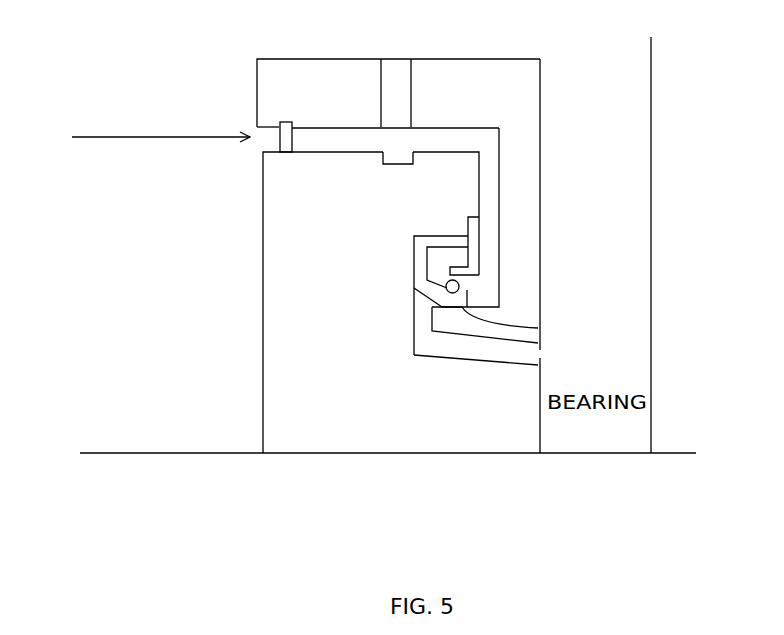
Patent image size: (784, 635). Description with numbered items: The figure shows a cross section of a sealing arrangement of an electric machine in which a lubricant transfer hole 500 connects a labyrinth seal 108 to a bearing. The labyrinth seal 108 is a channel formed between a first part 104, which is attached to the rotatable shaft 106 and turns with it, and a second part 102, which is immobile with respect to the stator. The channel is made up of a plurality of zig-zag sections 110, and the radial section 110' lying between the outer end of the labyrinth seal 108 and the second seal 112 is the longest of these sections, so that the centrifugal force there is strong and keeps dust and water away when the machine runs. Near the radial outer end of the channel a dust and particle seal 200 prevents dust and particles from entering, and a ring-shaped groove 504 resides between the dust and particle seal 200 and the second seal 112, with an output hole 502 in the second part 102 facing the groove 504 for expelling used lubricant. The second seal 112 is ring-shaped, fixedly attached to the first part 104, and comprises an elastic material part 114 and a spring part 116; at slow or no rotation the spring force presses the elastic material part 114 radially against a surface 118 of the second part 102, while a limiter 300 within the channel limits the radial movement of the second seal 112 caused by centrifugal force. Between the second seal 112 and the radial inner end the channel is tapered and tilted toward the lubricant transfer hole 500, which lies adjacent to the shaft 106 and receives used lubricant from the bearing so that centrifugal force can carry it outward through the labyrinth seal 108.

The second part 102 is at (303, 59).
The first part 104 is at (333, 314).
The shaft 106 is at (279, 508).
The labyrinth seal 108 is at (141, 137).
The zig-zag sections 110 is at (305, 247).
The radial section 110' is at (598, 204).
The second seal 112 is at (432, 236).
The elastic material part 114 is at (413, 257).
The spring part 116 is at (459, 283).
The surface 118 is at (433, 310).
The dust and particle seal 200 is at (287, 122).
The limiter 300 is at (476, 217).
The lubricant transfer hole 500 is at (542, 358).
The output hole 502 is at (398, 59).
The groove 504 is at (397, 157).